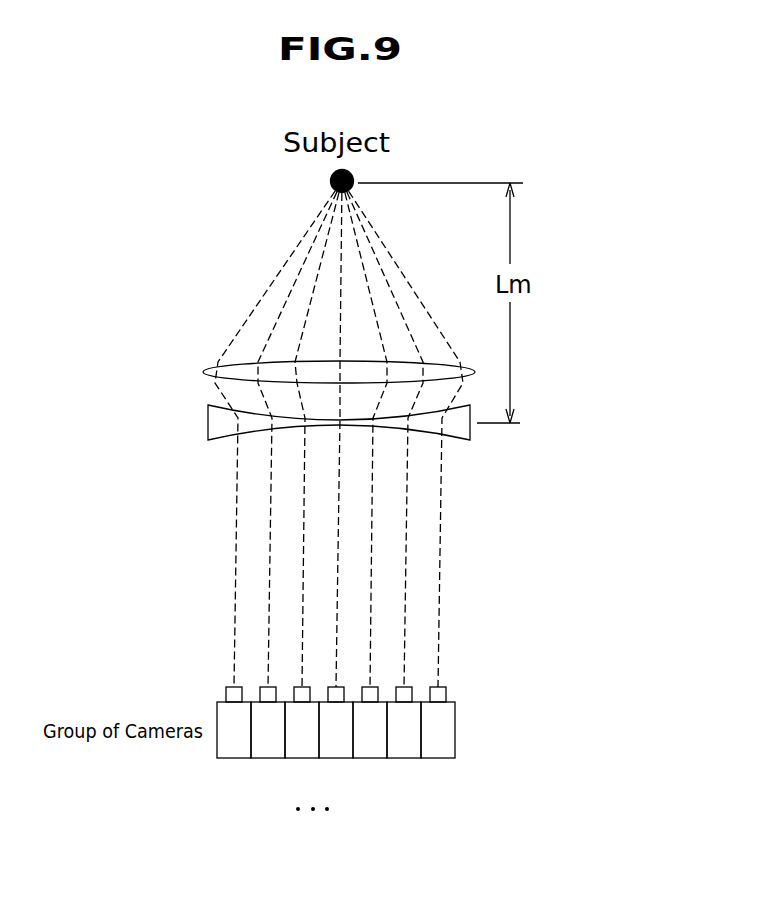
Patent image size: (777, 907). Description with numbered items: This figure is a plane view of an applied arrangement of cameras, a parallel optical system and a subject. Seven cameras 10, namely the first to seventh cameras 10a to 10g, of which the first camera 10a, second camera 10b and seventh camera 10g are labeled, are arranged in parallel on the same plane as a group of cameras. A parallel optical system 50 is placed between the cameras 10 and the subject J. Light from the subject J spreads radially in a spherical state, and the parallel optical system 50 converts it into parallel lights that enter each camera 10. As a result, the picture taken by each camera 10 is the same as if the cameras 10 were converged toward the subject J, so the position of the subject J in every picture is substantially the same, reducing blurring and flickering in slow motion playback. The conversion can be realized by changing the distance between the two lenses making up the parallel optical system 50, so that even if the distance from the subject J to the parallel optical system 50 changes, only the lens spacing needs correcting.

The subject J is at (328, 180).
The parallel optical system 50 is at (195, 353).
The camera 10 is at (368, 750).
The first camera 10a is at (232, 759).
The second camera 10b is at (268, 759).
The seventh camera 10g is at (437, 759).